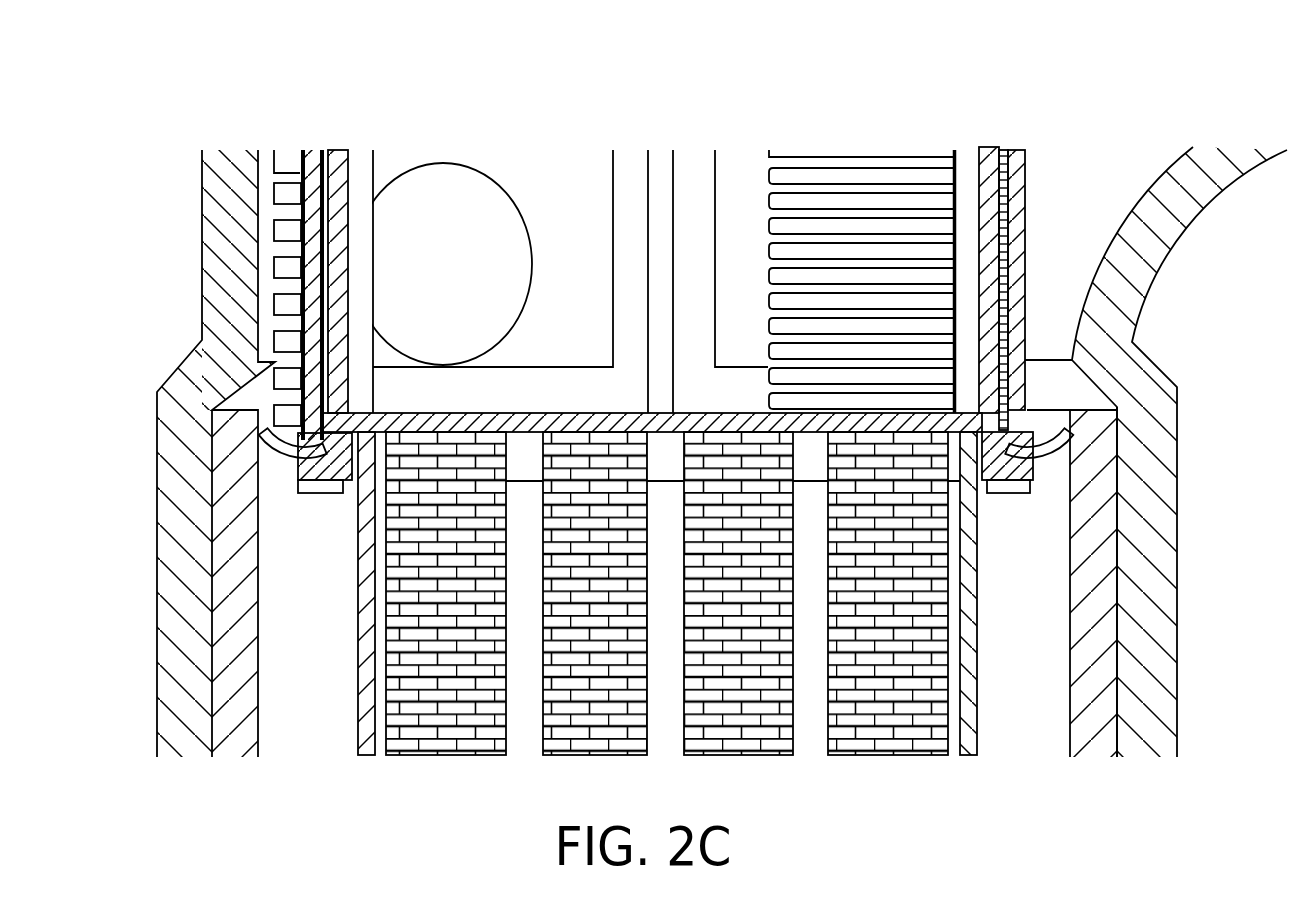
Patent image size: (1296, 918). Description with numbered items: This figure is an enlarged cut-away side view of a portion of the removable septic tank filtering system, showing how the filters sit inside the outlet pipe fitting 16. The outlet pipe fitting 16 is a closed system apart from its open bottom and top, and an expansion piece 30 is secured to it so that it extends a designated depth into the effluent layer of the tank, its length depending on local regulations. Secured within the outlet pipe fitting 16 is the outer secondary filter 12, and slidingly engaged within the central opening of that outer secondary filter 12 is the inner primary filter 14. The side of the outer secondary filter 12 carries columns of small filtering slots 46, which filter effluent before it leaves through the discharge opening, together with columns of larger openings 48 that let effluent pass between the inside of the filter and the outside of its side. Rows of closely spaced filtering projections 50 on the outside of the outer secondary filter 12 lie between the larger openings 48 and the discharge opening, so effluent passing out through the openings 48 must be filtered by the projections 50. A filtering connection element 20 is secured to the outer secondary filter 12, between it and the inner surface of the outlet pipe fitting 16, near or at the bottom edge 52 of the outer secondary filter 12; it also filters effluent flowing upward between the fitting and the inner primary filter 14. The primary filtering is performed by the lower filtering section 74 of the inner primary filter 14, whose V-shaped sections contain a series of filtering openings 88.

The outer secondary filter 12 is at (1007, 207).
The inner primary filter 14 is at (1015, 245).
The outlet pipe fitting 16 is at (1178, 213).
The filtering connection element 20 is at (1022, 445).
The expansion piece 30 is at (1100, 704).
The filtering slots 46 is at (915, 299).
The larger openings 48 is at (407, 255).
The filtering projections 50 is at (288, 305).
The bottom edge 52 is at (1040, 432).
The lower filtering section 74 is at (350, 593).
The filtering openings 88 is at (400, 685).